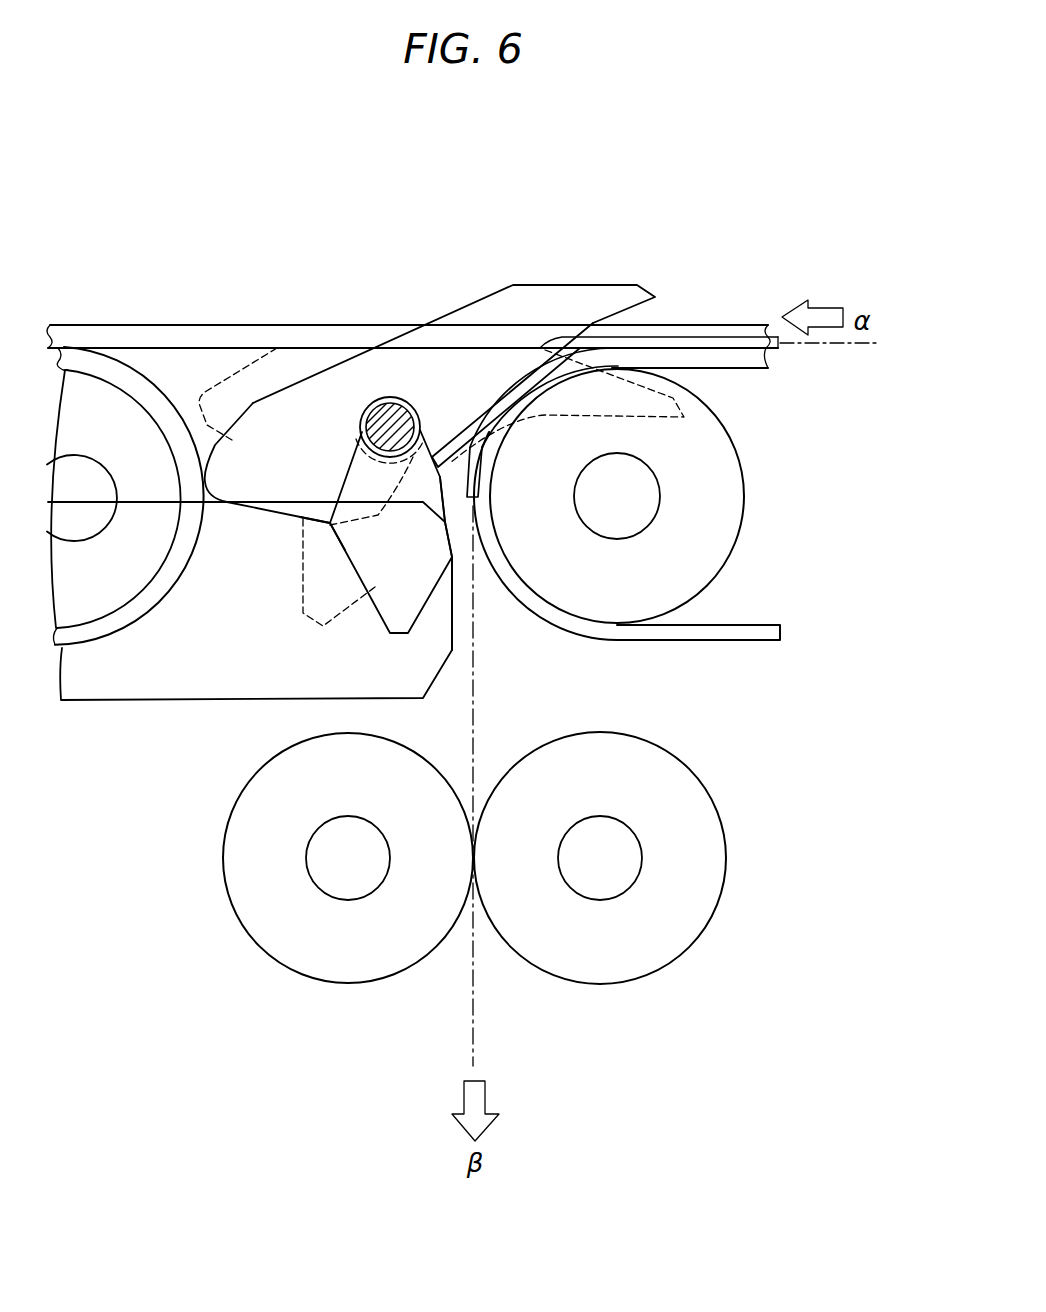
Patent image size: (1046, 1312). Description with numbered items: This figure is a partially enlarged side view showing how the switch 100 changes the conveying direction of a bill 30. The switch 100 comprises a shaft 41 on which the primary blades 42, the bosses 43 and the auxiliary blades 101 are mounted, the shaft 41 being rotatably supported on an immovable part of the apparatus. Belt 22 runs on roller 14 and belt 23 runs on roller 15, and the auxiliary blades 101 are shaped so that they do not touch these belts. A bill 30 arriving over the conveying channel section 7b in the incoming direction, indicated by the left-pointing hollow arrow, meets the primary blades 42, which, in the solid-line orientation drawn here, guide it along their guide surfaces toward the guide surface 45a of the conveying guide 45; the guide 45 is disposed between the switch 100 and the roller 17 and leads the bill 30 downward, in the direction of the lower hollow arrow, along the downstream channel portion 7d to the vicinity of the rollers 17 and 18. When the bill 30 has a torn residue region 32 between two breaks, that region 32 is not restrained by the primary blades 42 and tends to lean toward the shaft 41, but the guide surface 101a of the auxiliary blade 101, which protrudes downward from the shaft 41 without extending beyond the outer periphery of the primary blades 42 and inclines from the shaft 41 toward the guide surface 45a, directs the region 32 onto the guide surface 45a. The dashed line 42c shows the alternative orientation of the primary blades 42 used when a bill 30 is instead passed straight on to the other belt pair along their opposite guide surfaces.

The roller 14 is at (83, 383).
The belt 22 is at (142, 377).
The auxiliary blade 101 is at (381, 461).
The shaft 41 is at (378, 415).
The residue region 32 is at (462, 427).
The switch 100 is at (549, 272).
The primary blade 42 is at (612, 285).
The bill 30 is at (733, 325).
The conveying channel section 7b is at (858, 346).
The roller 15 is at (729, 510).
The belt 23 is at (660, 641).
The boss 43 is at (330, 526).
The dashed-line orientation of primary blades 42c is at (305, 588).
The guide surface 101a is at (447, 487).
The guide surface 45a is at (455, 640).
The conveying guide 45 is at (314, 659).
The sheet conveyance path 7d is at (476, 1044).
The roller 17 is at (340, 983).
The roller 18 is at (597, 984).